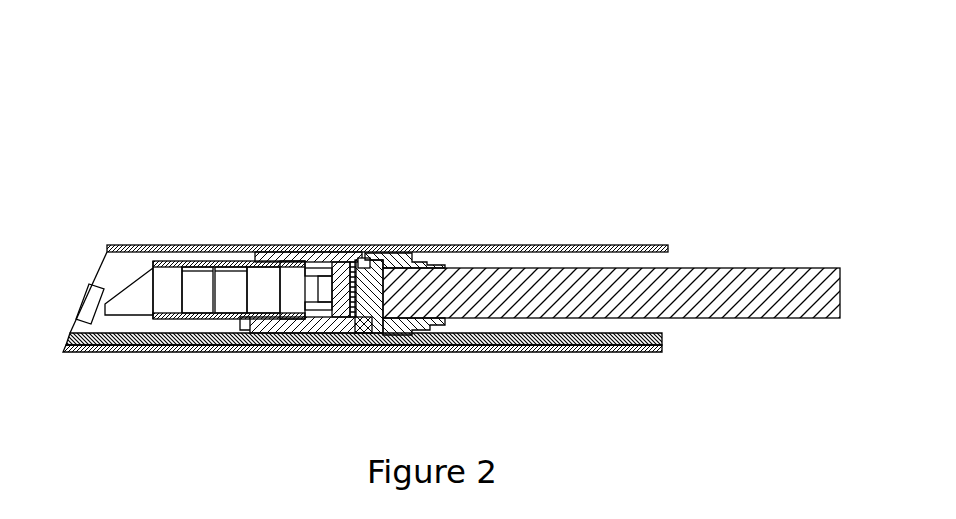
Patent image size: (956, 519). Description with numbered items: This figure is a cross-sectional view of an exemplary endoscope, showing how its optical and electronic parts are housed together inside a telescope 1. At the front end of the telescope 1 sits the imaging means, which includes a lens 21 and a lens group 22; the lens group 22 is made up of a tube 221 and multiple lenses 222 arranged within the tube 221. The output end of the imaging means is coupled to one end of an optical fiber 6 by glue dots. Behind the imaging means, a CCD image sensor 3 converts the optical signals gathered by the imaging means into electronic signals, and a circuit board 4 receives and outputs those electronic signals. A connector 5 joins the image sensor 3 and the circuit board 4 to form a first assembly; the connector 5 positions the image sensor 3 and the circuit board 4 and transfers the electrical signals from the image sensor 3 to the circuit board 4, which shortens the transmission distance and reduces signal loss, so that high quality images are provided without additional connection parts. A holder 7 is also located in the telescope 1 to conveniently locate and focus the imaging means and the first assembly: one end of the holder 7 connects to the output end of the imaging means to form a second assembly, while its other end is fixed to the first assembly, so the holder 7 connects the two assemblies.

The telescope 1 is at (118, 352).
The optical fiber 6 is at (78, 352).
The lens 21 is at (97, 304).
The lens group 22 is at (257, 144).
The lenses 222 is at (198, 282).
The tube 221 is at (228, 261).
The holder 7 is at (318, 247).
The CCD image sensor 3 is at (338, 297).
The connector 5 is at (385, 247).
The circuit board 4 is at (495, 292).